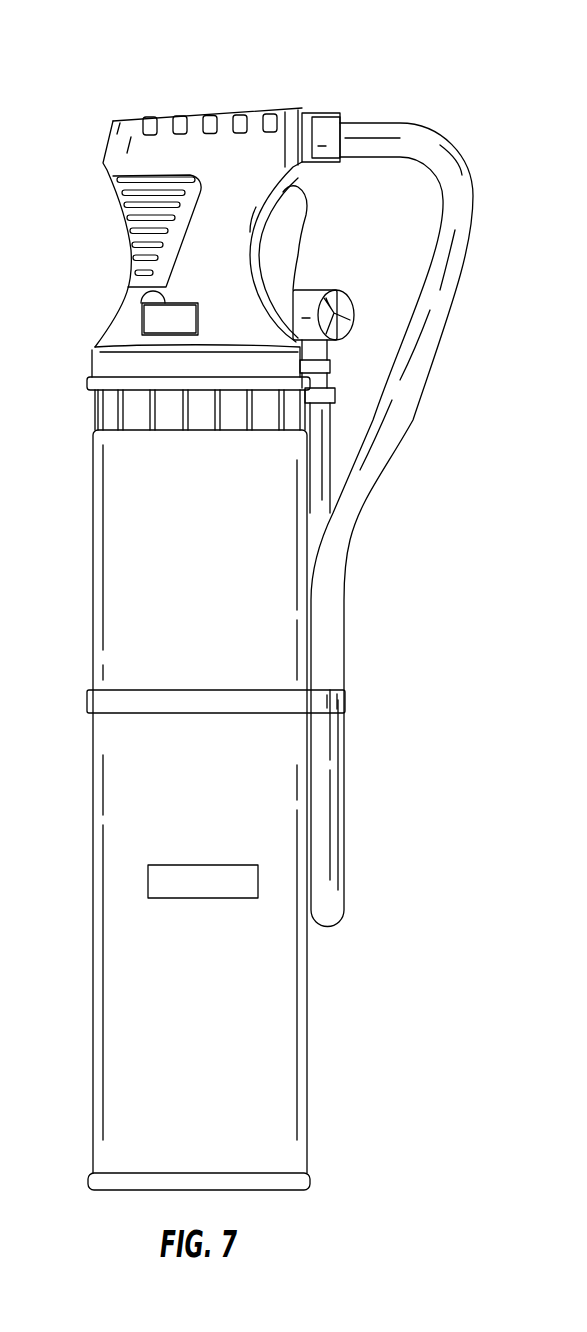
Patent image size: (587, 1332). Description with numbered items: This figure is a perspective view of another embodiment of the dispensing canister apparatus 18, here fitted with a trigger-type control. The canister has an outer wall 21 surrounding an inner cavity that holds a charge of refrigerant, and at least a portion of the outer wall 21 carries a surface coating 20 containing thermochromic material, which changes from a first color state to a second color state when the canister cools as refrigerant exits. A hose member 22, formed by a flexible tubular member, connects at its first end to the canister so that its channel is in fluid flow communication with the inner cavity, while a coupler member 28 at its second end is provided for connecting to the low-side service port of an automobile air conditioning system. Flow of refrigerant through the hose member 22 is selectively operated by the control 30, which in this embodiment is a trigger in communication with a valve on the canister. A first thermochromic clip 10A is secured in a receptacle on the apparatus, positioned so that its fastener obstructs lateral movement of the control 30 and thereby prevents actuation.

The dispensing canister apparatus 18 is at (108, 40).
The first thermochromic clip 10A is at (147, 320).
The surface coating 20 is at (148, 880).
The outer wall 21 is at (93, 509).
The hose member 22 is at (452, 157).
The coupler member 28 is at (350, 304).
The control 30 is at (300, 206).